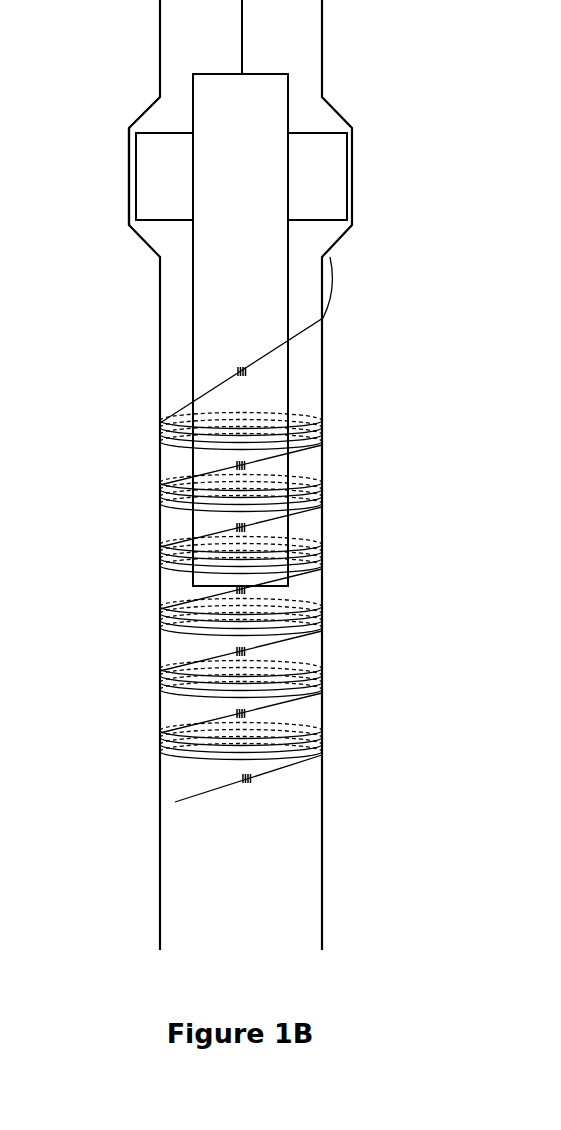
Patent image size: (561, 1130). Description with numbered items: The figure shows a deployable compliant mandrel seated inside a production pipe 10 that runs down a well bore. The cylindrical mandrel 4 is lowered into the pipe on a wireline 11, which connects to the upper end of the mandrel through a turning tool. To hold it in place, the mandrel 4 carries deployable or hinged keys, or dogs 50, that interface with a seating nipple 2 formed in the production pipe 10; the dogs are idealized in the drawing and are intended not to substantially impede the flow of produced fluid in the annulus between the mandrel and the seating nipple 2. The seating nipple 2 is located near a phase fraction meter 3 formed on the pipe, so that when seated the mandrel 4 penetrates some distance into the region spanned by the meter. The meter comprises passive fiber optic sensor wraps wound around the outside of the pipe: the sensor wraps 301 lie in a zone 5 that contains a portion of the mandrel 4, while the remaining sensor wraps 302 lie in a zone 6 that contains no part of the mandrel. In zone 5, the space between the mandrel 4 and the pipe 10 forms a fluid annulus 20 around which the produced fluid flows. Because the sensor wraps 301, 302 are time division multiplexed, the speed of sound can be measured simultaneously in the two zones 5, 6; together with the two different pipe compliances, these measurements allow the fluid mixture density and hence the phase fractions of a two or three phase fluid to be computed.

The seating nipple 2 is at (129, 185).
The phase fraction meter 3 is at (229, 529).
The mandrel 4 is at (233, 292).
The zone 5 is at (246, 495).
The zone 6 is at (246, 684).
The production pipe 10 is at (160, 303).
The wireline 11 is at (242, 42).
The fluid annulus 20 is at (246, 529).
The dogs 50 is at (161, 155).
The sensor wraps 301 is at (192, 493).
The sensor wraps 302 is at (192, 682).